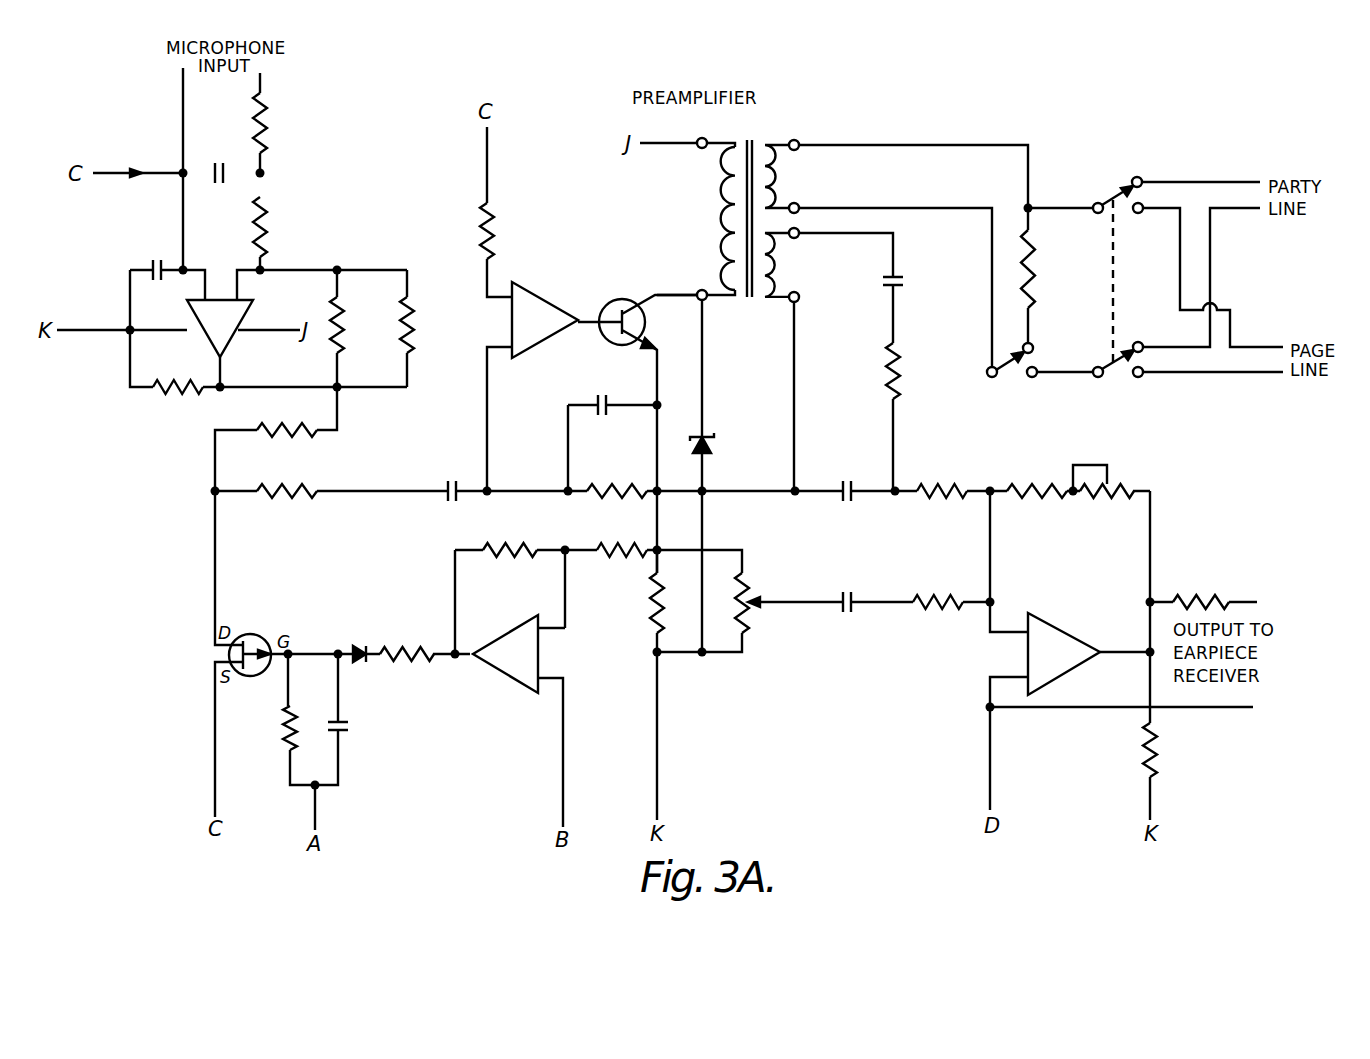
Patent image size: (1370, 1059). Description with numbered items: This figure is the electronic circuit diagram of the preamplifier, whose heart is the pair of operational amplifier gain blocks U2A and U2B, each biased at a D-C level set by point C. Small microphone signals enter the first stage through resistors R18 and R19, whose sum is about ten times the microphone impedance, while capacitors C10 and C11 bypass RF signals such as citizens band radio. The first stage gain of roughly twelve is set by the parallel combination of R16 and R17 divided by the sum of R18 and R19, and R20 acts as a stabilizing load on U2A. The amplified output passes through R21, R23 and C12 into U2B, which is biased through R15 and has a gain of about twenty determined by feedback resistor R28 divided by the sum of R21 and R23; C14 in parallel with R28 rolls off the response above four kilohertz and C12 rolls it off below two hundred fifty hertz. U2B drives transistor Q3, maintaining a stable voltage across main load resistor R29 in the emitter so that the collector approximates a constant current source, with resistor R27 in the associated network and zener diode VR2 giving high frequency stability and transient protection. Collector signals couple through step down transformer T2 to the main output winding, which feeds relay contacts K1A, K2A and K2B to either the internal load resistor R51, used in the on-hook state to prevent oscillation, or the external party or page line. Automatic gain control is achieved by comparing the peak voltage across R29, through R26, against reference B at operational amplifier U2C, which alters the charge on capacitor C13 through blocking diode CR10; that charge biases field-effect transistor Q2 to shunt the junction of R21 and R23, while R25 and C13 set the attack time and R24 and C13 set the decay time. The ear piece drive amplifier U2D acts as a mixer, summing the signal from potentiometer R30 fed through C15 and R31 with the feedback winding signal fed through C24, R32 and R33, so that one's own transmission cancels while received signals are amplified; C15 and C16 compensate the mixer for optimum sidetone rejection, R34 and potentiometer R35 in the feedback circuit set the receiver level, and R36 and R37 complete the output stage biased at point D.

The bypass capacitor C10 is at (222, 158).
The bypass capacitor C11 is at (156, 255).
The input resistor R18 is at (281, 123).
The input resistor R19 is at (281, 227).
The operational amplifier gain block U2A is at (226, 323).
The feedback resistor R17 is at (359, 328).
The feedback resistor R16 is at (428, 328).
The stabilizing load resistor R20 is at (178, 399).
The coupling resistor R21 is at (276, 439).
The coupling resistor R23 is at (287, 476).
The coupling capacitor C12 is at (451, 477).
The bias resistor R15 is at (507, 231).
The operational amplifier gain block U2B is at (541, 320).
The transistor Q3 is at (637, 338).
The step down transformer T2 is at (741, 232).
The capacitor C14 is at (609, 393).
The feedback resistor R28 is at (617, 476).
The zener diode VR2 is at (724, 476).
The resistor R27 is at (622, 537).
The main load resistor R29 is at (635, 603).
The potentiometer R30 is at (789, 603).
The resistor R26 is at (510, 586).
The compensating capacitor C15 is at (860, 613).
The resistor R31 is at (920, 614).
The compensating capacitor C16 is at (851, 478).
The field-effect transistor Q2 is at (250, 641).
The blocking diode CR10 is at (364, 667).
The resistor R25 is at (407, 639).
The resistor R24 is at (275, 719).
The capacitor C13 is at (351, 719).
The operational amplifier U2C is at (516, 719).
The internal load resistor R51 is at (1051, 275).
The relay contact K1A is at (1009, 370).
The relay contact K2A is at (1101, 194).
The relay contact K2B is at (1117, 370).
The capacitor C24 is at (913, 277).
The resistor R32 is at (916, 371).
The resistor R33 is at (940, 476).
The feedback resistor R34 is at (1033, 476).
The potentiometer R35 is at (1117, 476).
The output resistor R36 is at (1201, 586).
The resistor R37 is at (1173, 750).
The ear piece drive amplifier U2D is at (1057, 652).